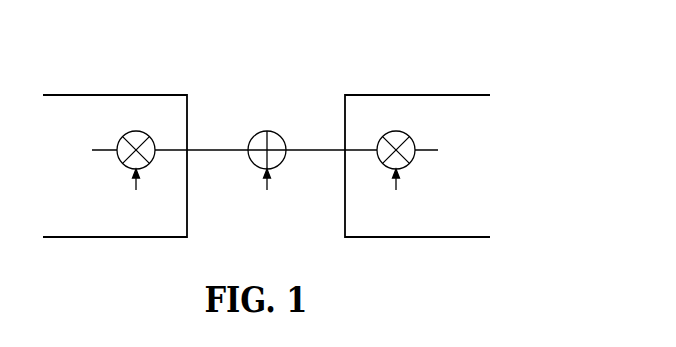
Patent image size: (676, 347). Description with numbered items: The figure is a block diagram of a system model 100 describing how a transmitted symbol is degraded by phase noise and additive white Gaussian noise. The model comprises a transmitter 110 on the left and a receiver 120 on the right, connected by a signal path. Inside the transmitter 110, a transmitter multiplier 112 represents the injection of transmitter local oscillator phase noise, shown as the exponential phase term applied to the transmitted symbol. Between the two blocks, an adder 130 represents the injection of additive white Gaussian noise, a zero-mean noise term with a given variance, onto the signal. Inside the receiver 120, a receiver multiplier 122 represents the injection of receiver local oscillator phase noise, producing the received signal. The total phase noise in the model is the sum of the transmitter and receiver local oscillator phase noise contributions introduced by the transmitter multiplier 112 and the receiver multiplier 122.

The system model 100 is at (516, 41).
The transmitter 110 is at (108, 58).
The transmitter multiplier 112 is at (127, 134).
The receiver 120 is at (414, 58).
The receiver multiplier 122 is at (406, 134).
The adder 130 is at (267, 129).